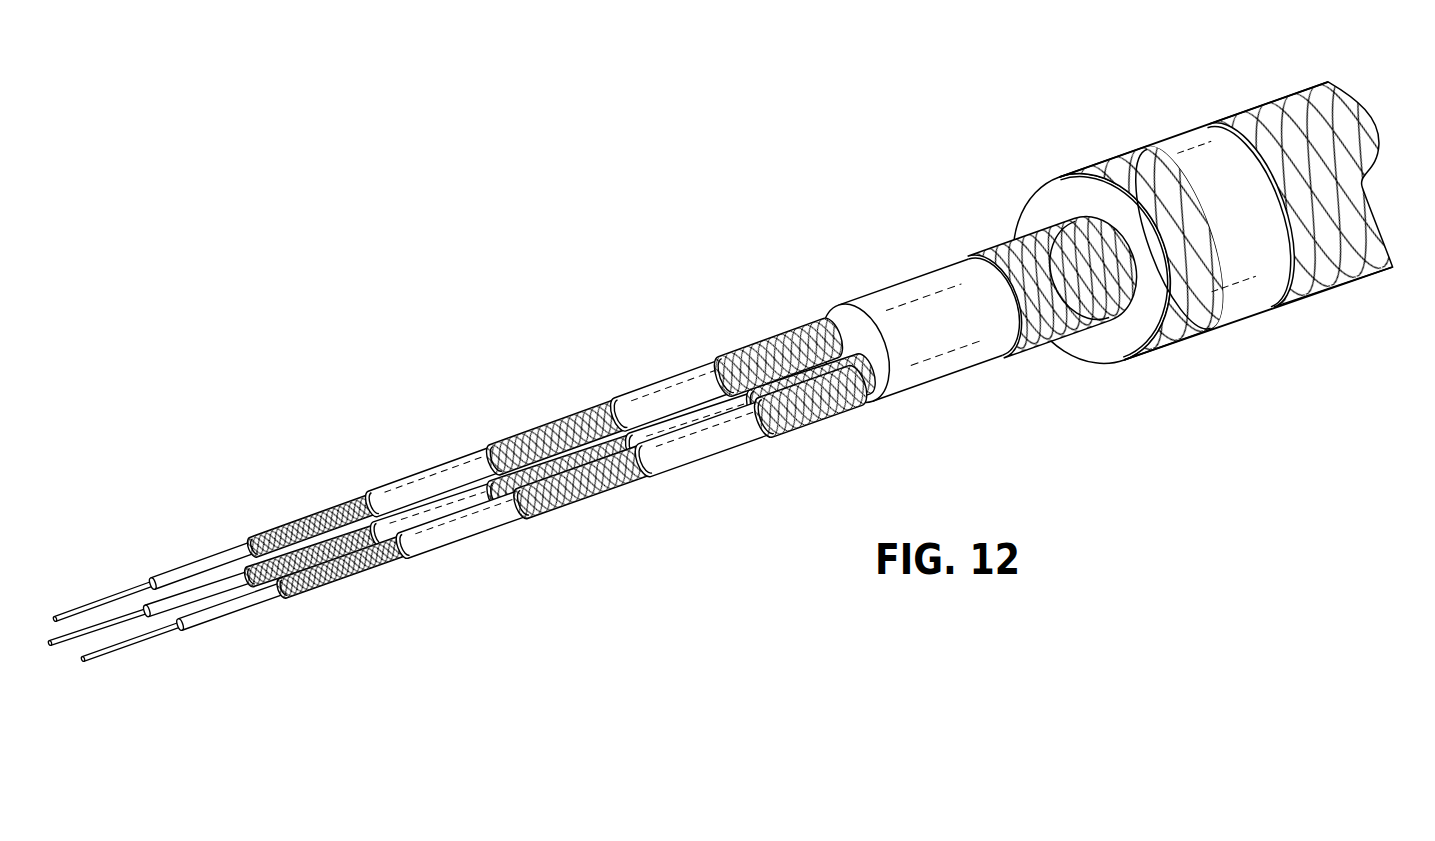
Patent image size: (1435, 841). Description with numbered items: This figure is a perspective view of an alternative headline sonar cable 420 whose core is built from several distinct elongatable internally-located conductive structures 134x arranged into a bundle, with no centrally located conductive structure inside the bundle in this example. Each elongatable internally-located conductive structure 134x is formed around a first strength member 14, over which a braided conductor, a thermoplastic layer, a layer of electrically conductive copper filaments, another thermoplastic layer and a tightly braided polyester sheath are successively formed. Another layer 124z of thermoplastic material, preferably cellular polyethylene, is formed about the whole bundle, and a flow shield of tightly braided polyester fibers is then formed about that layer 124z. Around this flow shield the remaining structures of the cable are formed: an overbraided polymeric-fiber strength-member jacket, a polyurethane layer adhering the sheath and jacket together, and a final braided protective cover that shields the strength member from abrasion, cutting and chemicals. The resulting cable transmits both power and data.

The first strength member 14 is at (130, 647).
The elongatable internally-located conductive structure 134x is at (662, 377).
The layer of thermoplastic material 124z is at (890, 280).
The headline sonar cable 420 is at (1190, 219).